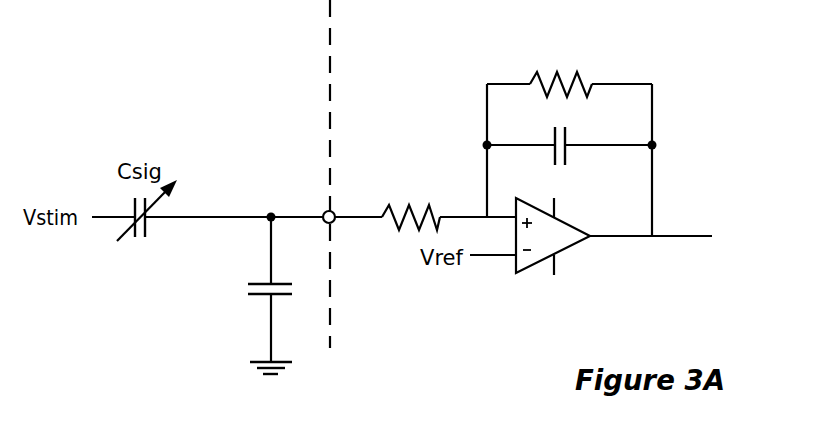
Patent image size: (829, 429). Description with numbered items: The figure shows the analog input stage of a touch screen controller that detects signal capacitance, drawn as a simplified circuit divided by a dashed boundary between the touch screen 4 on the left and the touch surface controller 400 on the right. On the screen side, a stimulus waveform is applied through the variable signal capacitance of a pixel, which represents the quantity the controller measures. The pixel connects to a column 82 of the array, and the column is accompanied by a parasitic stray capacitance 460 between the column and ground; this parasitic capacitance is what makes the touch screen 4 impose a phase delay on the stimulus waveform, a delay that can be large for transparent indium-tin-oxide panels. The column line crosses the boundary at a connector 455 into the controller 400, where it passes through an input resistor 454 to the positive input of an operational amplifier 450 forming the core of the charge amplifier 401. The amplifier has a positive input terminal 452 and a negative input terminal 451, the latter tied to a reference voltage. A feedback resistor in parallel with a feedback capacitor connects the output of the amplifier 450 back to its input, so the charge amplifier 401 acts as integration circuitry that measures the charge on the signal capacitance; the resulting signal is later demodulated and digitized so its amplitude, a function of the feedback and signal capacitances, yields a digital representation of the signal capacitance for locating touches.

The touch screen 4 is at (267, 174).
The touch surface controller 400 is at (545, 124).
The column 82 is at (232, 215).
The Cstray 460 is at (257, 296).
The connector between screen and controller 455 is at (326, 209).
The input resistor Rin 454 is at (406, 232).
The operational amplifier 450 is at (572, 247).
The positive input of amplifier 452 is at (508, 212).
The negative input of amplifier 451 is at (510, 273).
The charge amplifier 401 is at (650, 57).